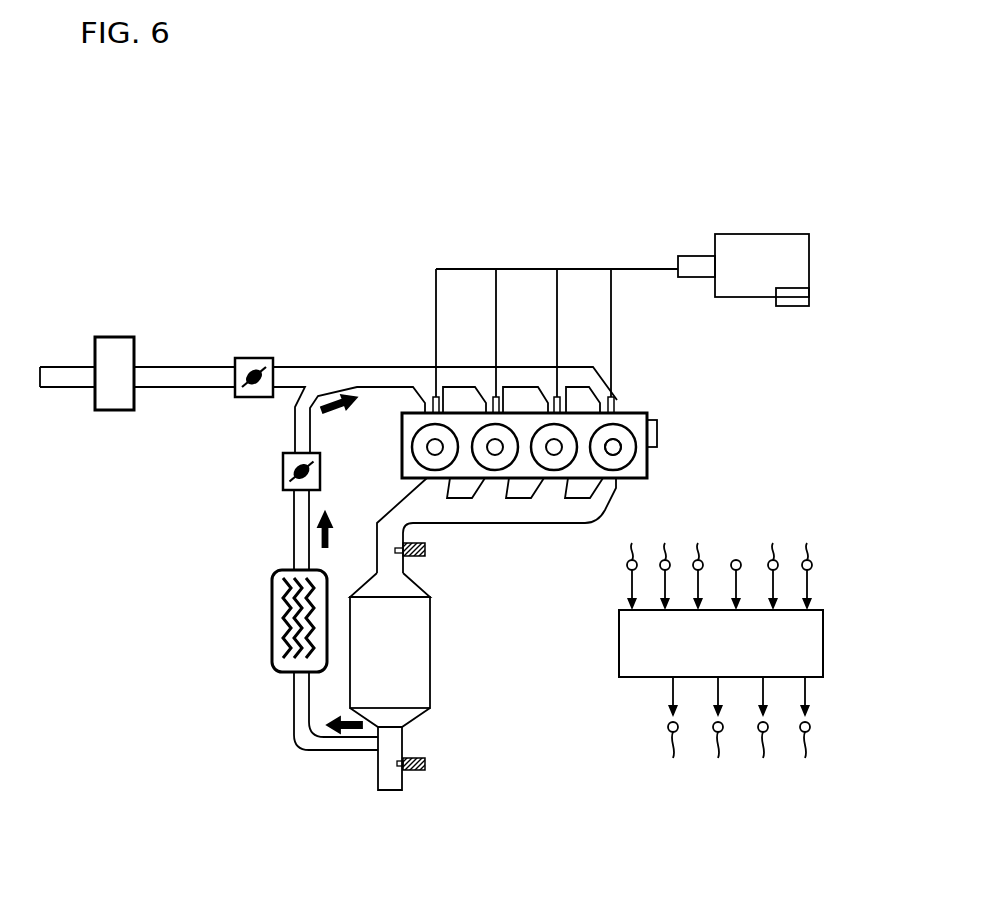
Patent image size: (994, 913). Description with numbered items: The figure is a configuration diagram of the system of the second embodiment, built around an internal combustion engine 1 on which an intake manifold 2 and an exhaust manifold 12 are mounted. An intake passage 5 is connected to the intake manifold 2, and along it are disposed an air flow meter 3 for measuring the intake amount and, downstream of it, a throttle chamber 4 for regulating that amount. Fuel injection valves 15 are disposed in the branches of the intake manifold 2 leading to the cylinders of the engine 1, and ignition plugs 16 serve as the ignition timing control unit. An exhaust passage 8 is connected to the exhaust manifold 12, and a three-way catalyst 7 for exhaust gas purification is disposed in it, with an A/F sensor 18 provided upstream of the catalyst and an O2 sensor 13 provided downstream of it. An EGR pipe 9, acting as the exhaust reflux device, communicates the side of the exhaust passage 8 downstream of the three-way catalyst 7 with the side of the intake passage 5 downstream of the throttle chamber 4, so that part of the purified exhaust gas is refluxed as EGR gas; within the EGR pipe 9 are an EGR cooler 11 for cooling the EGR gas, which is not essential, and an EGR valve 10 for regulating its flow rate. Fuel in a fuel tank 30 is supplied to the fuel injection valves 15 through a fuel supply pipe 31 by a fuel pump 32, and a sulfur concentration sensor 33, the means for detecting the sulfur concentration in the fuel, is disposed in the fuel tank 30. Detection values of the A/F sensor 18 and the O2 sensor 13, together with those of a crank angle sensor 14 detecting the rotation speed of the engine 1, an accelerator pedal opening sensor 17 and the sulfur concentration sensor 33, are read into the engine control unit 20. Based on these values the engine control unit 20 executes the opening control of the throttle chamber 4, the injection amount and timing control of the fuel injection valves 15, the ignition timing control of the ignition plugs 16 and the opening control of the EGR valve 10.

The internal combustion engine 1 is at (647, 413).
The intake manifold 2 is at (515, 373).
The air flow meter 3 is at (118, 410).
The throttle chamber 4 is at (258, 358).
The intake passage 5 is at (188, 368).
The three-way catalyst 7 is at (432, 657).
The exhaust passage 8 is at (398, 742).
The EGR pipe 9 is at (298, 520).
The EGR valve 10 is at (283, 472).
The EGR cooler 11 is at (272, 627).
The exhaust manifold 12 is at (530, 517).
The O2 sensor 13 is at (420, 767).
The crank angle sensor 14 is at (657, 435).
The fuel injection valves 15 is at (614, 405).
The ignition plugs 16 is at (615, 449).
The accelerator pedal opening sensor 17 is at (736, 560).
The A/F sensor 18 is at (420, 555).
The engine control unit 20 is at (619, 640).
The fuel tank 30 is at (733, 233).
The fuel supply pipe 31 is at (630, 268).
The fuel pump 32 is at (690, 256).
The sulfur concentration sensor 33 is at (787, 307).